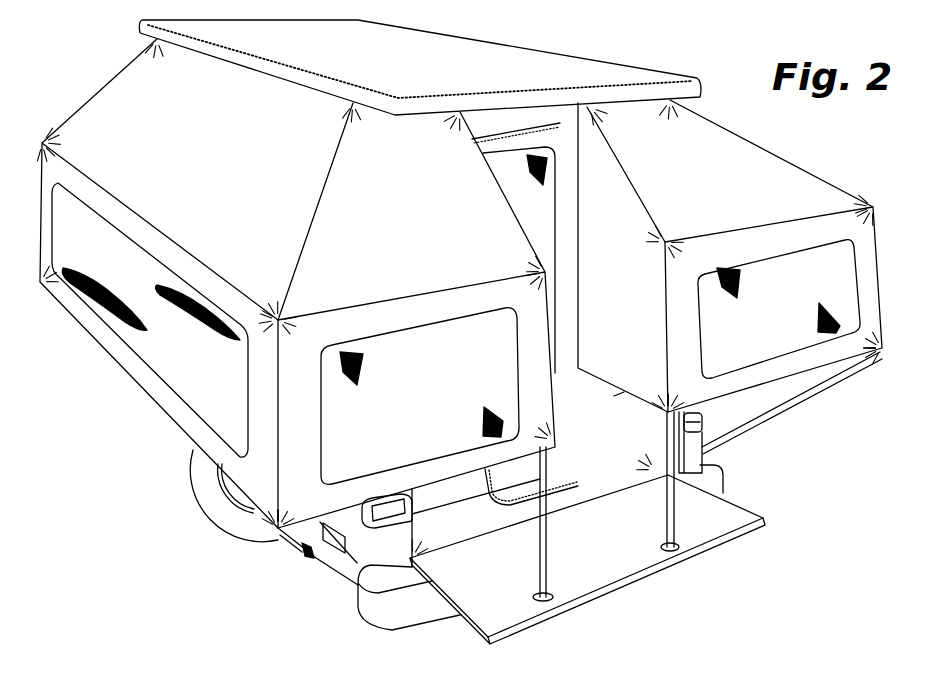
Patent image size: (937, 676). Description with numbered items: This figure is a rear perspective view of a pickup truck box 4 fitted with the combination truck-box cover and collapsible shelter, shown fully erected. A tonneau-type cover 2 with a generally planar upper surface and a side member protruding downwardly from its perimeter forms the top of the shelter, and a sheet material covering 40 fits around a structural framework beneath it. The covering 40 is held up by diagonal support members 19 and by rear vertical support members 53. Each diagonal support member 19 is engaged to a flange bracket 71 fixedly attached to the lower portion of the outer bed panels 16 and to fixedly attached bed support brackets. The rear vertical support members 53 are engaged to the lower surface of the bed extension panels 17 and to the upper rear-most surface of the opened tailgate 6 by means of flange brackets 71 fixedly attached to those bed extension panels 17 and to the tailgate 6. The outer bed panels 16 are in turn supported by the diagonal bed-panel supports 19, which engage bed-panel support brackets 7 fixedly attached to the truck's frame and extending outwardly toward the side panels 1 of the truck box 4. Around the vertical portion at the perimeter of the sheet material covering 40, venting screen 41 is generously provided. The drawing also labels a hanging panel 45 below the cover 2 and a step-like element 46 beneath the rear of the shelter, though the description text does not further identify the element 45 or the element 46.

The side panels 1 is at (350, 565).
The tonneau-type cover 2 is at (600, 58).
The pickup truck box 4 is at (720, 452).
The tailgate 6 is at (730, 517).
The bed-panel support brackets 7 is at (313, 552).
The outer bed panels 16 is at (175, 423).
The bed extension panels 17 is at (440, 483).
The diagonal support members 19 is at (760, 408).
The sheet material covering 40 is at (775, 177).
The venting screen 41 is at (152, 342).
The canvas panel 45 is at (502, 130).
The step 46 is at (567, 460).
The rear vertical support members 53 is at (667, 500).
The flange brackets 71 is at (660, 548).